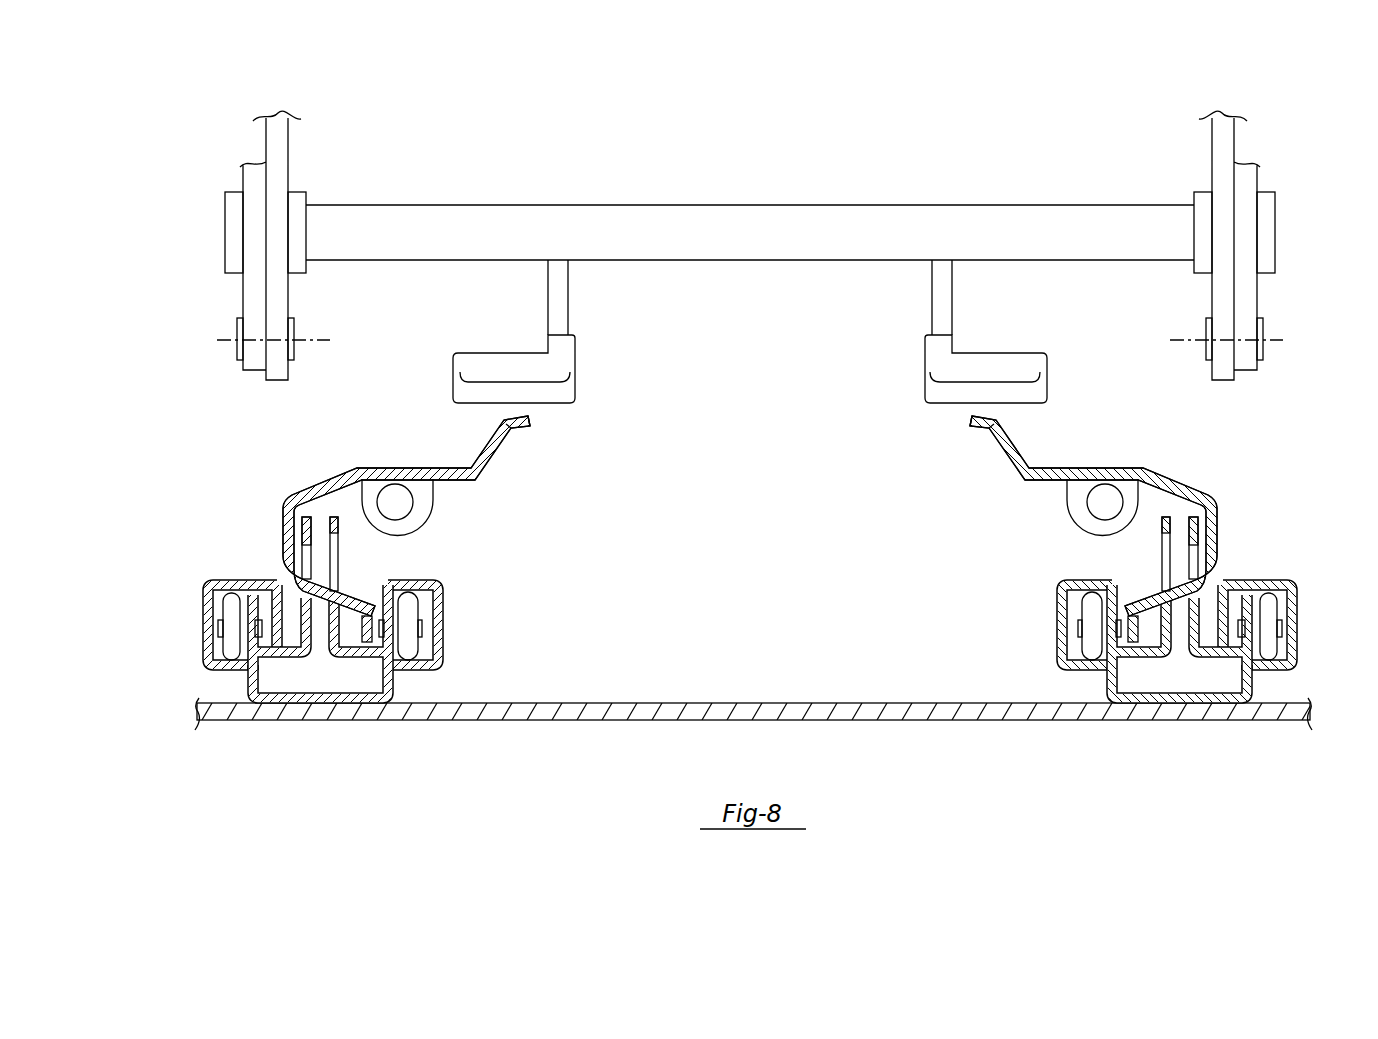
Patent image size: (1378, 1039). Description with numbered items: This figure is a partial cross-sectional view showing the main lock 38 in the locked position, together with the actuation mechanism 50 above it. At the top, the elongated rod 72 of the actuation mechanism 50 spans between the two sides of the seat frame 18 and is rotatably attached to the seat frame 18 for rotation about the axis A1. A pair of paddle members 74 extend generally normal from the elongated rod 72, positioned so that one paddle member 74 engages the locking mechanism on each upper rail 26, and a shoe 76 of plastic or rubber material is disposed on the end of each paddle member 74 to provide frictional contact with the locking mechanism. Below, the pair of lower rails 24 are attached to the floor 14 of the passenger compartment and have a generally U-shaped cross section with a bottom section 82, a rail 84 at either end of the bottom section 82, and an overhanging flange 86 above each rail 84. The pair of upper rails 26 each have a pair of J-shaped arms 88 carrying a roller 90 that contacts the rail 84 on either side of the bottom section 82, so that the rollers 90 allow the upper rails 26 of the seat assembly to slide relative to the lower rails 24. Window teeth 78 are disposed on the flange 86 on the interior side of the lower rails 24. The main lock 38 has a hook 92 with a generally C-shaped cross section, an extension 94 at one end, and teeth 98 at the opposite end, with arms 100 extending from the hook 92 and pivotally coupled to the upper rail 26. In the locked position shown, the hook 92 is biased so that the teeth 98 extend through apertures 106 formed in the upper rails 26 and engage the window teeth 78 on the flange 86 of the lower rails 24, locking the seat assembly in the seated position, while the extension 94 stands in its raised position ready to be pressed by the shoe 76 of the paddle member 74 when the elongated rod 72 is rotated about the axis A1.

The floor 14 is at (632, 720).
The seat frame 18 is at (243, 176).
The lower rails 24 is at (746, 667).
The upper rails 26 is at (751, 566).
The main lock 38 is at (755, 498).
The actuation mechanism 50 is at (750, 254).
The elongated rod 72 is at (371, 205).
The paddle members 74 is at (548, 297).
The shoe 76 is at (453, 370).
The window teeth 78 is at (382, 580).
The bottom section 82 is at (353, 703).
The rail 84 is at (237, 672).
The overhanging flange 86 is at (268, 631).
The J-shaped arms 88 is at (346, 657).
The roller 90 is at (233, 603).
The hook 92 is at (283, 505).
The extension 94 is at (533, 424).
The teeth 98 is at (360, 603).
The arms 100 is at (428, 510).
The apertures 106 is at (338, 542).
The axis A1 is at (1275, 230).